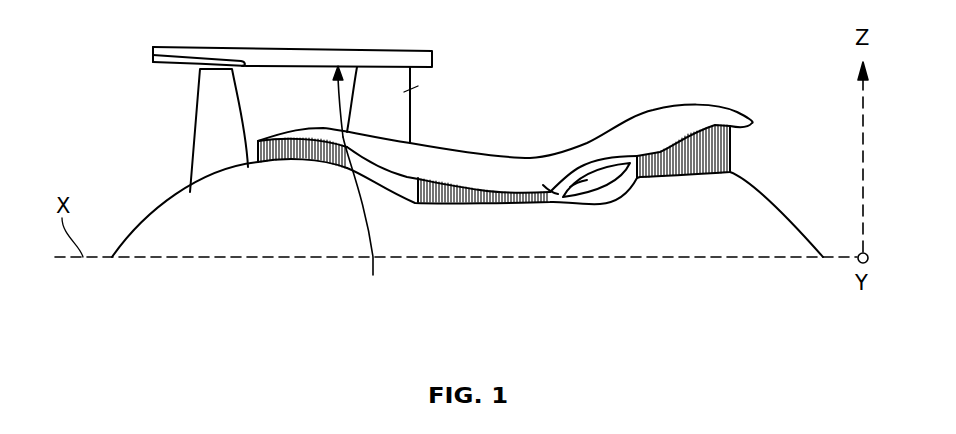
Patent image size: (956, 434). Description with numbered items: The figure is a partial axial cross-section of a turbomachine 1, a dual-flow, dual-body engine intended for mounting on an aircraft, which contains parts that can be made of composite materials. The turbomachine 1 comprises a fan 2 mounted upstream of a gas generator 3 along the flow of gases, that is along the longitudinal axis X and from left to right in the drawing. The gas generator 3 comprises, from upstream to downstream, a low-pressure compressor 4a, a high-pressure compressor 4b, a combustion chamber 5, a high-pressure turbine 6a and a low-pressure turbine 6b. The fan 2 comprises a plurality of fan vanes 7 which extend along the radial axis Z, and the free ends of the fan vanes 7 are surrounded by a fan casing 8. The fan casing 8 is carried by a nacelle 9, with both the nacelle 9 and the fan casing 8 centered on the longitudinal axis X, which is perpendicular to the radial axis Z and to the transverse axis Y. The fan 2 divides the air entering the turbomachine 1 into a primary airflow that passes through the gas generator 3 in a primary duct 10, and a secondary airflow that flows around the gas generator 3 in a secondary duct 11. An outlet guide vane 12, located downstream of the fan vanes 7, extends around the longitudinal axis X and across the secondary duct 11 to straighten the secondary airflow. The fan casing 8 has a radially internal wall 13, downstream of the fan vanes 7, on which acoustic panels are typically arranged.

The turbomachine 1 is at (662, 80).
The fan 2 is at (176, 124).
The gas generator 3 is at (536, 147).
The low-pressure compressor 4a is at (297, 152).
The high-pressure compressor 4b is at (477, 201).
The combustion chamber 5 is at (598, 177).
The high-pressure turbine 6a is at (641, 178).
The low-pressure turbine 6b is at (721, 150).
The fan vanes 7 is at (202, 155).
The fan casing 8 is at (228, 62).
The nacelle 9 is at (397, 57).
The primary duct 10 is at (412, 180).
The secondary duct 11 is at (302, 101).
The outlet guide vane 12 is at (412, 88).
The radially internal wall 13 is at (365, 222).